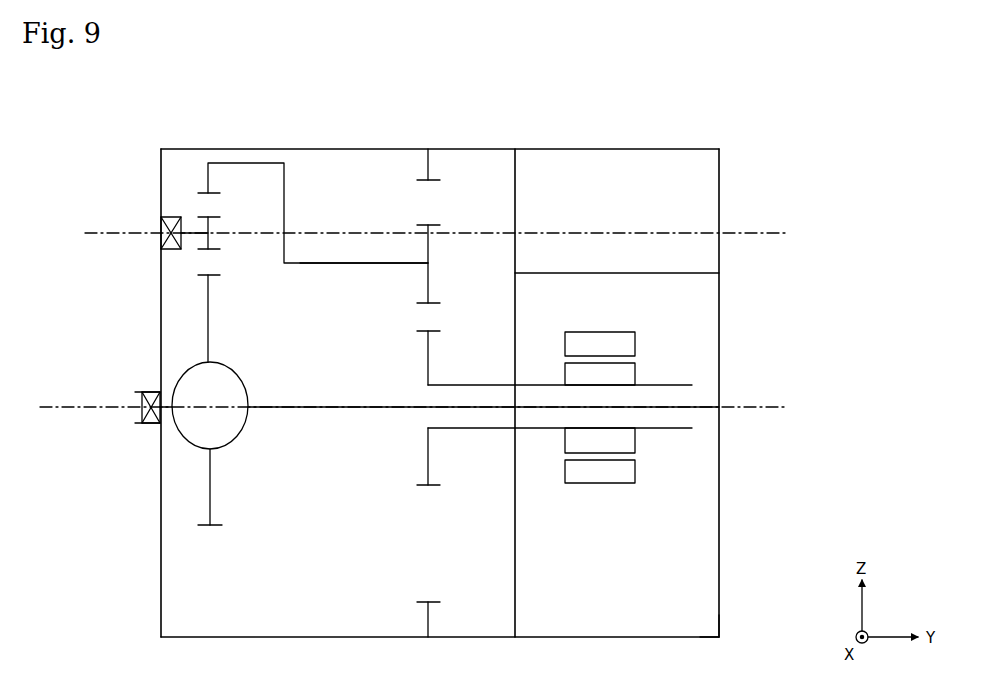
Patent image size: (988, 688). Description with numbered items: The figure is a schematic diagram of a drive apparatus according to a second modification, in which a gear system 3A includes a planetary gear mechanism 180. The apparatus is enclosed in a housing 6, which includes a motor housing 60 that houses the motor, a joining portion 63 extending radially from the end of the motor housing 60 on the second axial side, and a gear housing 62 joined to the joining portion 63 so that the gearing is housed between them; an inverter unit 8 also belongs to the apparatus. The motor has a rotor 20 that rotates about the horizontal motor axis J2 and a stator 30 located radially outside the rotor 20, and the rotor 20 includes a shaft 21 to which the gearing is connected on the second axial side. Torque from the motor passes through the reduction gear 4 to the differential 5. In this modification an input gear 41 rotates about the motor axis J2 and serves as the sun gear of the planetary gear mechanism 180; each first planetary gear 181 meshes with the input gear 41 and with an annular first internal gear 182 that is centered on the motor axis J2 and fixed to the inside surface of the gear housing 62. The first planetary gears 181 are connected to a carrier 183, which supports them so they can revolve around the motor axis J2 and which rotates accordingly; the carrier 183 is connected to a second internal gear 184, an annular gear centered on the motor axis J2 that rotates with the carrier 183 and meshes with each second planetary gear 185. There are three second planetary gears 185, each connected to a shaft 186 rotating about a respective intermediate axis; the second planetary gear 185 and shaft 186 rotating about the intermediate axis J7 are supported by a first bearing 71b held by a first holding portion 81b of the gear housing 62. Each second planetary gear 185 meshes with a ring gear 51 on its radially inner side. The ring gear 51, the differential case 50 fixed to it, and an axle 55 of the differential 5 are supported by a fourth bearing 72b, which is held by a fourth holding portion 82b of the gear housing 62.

The gear system 3A is at (252, 590).
The reduction gear 4 is at (359, 212).
The differential 5 is at (439, 443).
The housing 6 is at (499, 150).
The inverter unit 8 is at (720, 207).
The rotor 20 is at (635, 375).
The shaft 21 is at (465, 385).
The stator 30 is at (635, 344).
The input gear 41 is at (418, 331).
The differential case 50 is at (244, 425).
The ring gear 51 is at (221, 270).
The axle 55 is at (318, 409).
The motor housing 60 is at (720, 614).
The gear housing 62 is at (160, 616).
The joining portion 63 is at (512, 598).
The first bearing 71b is at (160, 230).
The fourth bearing 72b is at (138, 400).
The first holding portion 81b is at (168, 228).
The fourth holding portion 82b is at (147, 390).
The planetary gear mechanism 180 is at (338, 241).
The first planetary gear 181 is at (440, 224).
The first internal gear 182 is at (422, 181).
The carrier 183 is at (333, 265).
The second internal gear 184 is at (221, 195).
The second planetary gear 185 is at (221, 250).
The shaft 186 is at (187, 236).
The intermediate axis J7 is at (762, 240).
The motor axis J2 is at (770, 410).